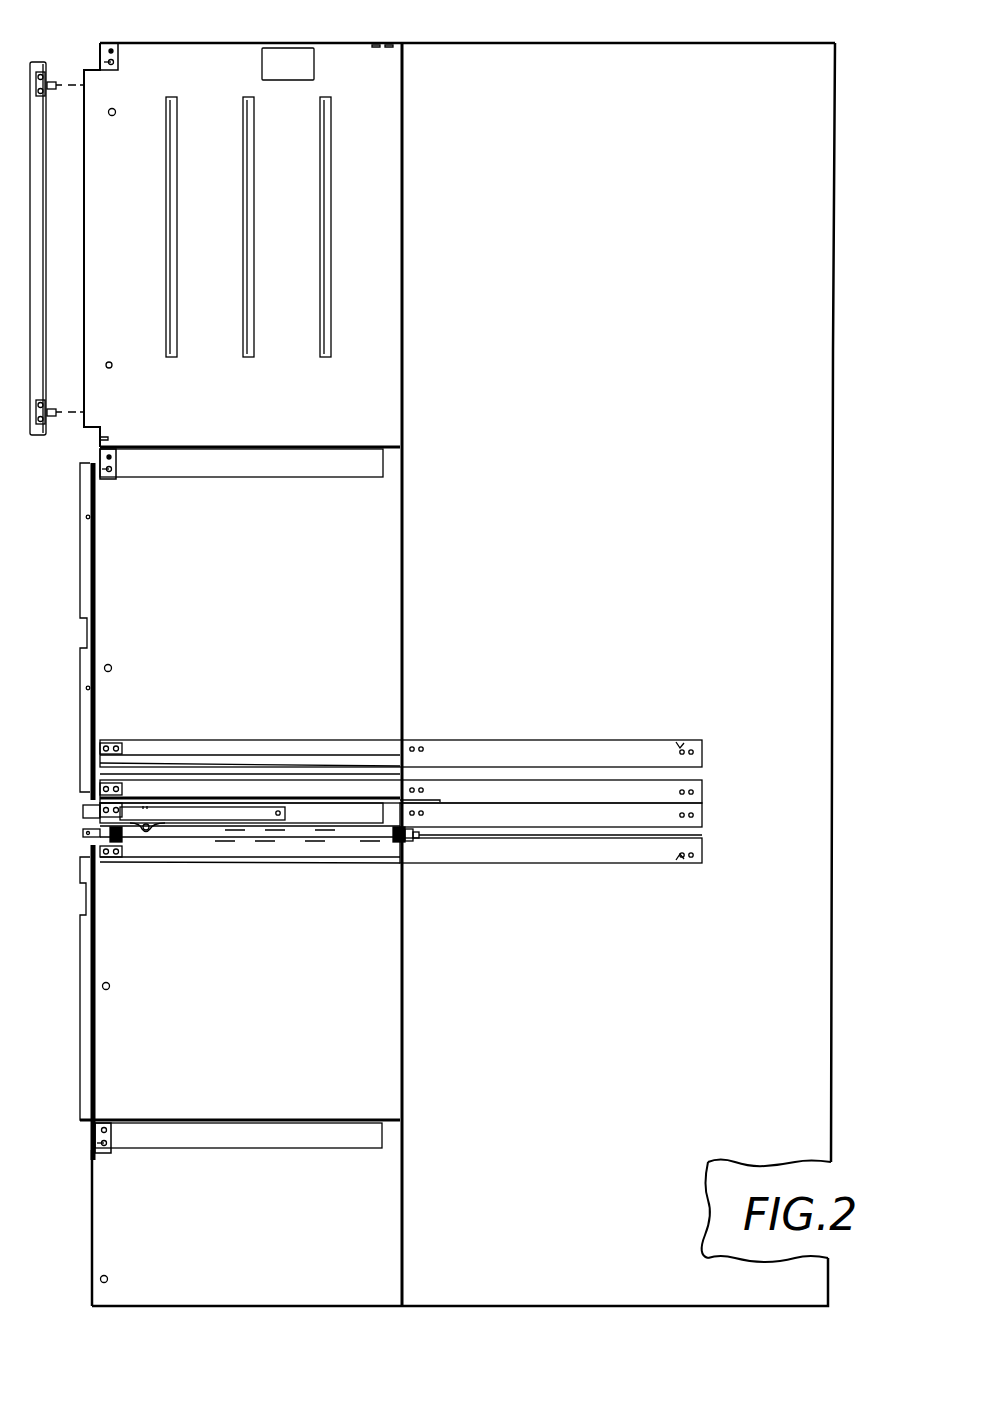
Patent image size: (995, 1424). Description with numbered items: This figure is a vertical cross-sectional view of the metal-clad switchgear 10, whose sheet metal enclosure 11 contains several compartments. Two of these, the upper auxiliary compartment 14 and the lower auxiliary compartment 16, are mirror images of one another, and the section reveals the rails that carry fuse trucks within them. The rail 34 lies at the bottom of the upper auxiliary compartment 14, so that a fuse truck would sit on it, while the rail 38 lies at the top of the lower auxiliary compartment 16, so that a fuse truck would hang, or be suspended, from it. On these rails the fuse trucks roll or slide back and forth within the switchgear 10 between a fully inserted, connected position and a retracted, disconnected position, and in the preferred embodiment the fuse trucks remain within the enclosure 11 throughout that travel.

The metal-clad switchgear 10 is at (662, 343).
The sheet metal enclosure 11 is at (652, 43).
The upper auxiliary compartment 14 is at (388, 552).
The lower auxiliary compartment 16 is at (400, 912).
The rail 34 is at (537, 742).
The rail 38 is at (533, 863).